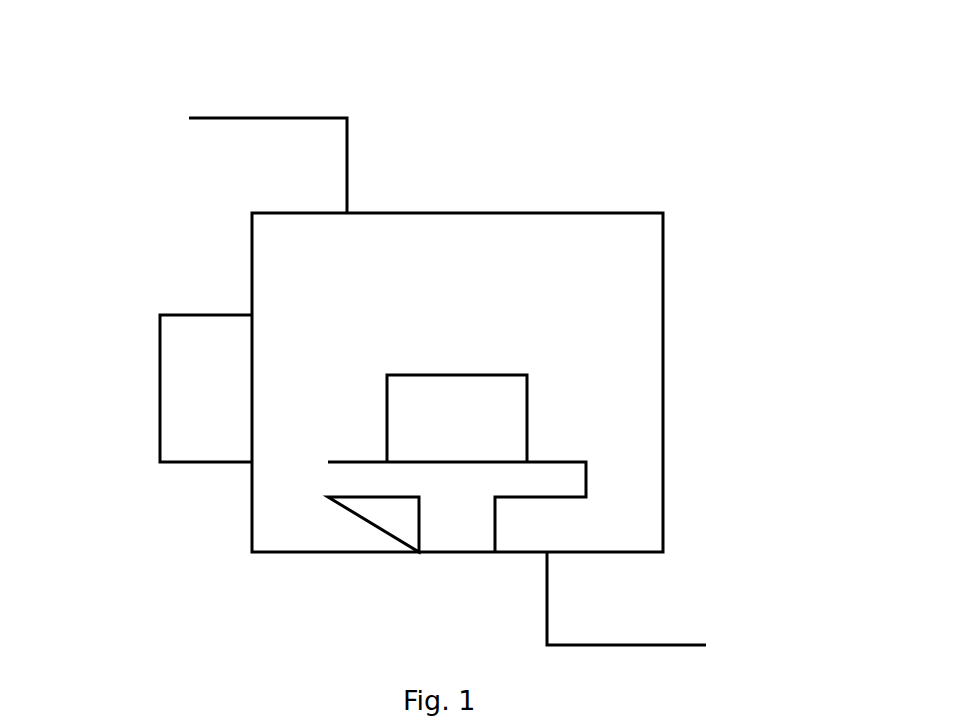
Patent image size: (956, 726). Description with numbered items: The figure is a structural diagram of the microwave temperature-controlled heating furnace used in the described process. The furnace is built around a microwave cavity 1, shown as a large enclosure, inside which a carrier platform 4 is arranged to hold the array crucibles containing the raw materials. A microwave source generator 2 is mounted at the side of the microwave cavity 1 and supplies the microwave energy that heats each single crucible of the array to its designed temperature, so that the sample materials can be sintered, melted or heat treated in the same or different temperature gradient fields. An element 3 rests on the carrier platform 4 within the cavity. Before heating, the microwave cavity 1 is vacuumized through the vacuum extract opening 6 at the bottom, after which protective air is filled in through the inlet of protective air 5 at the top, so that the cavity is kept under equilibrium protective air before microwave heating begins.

The microwave cavity 1 is at (665, 284).
The microwave source generator 2 is at (190, 376).
The sample / substrate 3 is at (487, 425).
The carrier platform 4 is at (554, 483).
The inlet of protective air 5 is at (349, 158).
The vacuum extract opening 6 is at (549, 604).